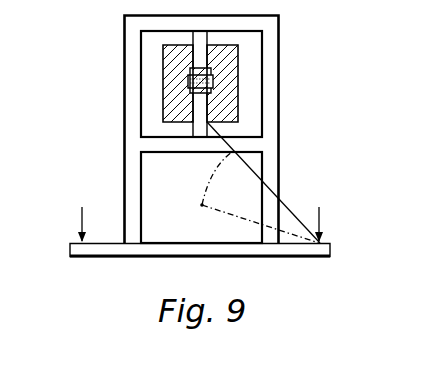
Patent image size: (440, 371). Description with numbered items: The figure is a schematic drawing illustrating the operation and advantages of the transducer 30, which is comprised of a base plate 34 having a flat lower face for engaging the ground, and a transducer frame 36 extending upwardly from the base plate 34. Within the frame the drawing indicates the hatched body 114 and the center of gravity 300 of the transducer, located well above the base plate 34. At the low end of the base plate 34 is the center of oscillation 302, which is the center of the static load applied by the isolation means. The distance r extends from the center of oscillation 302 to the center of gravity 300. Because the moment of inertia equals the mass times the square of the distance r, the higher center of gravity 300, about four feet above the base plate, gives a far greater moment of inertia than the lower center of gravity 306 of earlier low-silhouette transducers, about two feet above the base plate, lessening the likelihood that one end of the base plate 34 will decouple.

The transducer 30 is at (92, 50).
The transducer frame 36 is at (124, 143).
The base plate 34 is at (211, 253).
The hatched block (magnet core) 114 is at (241, 66).
The center of gravity 300 is at (201, 112).
The center of gravity 306 is at (196, 207).
The center of oscillation 302 is at (324, 242).
The distance r is at (267, 183).